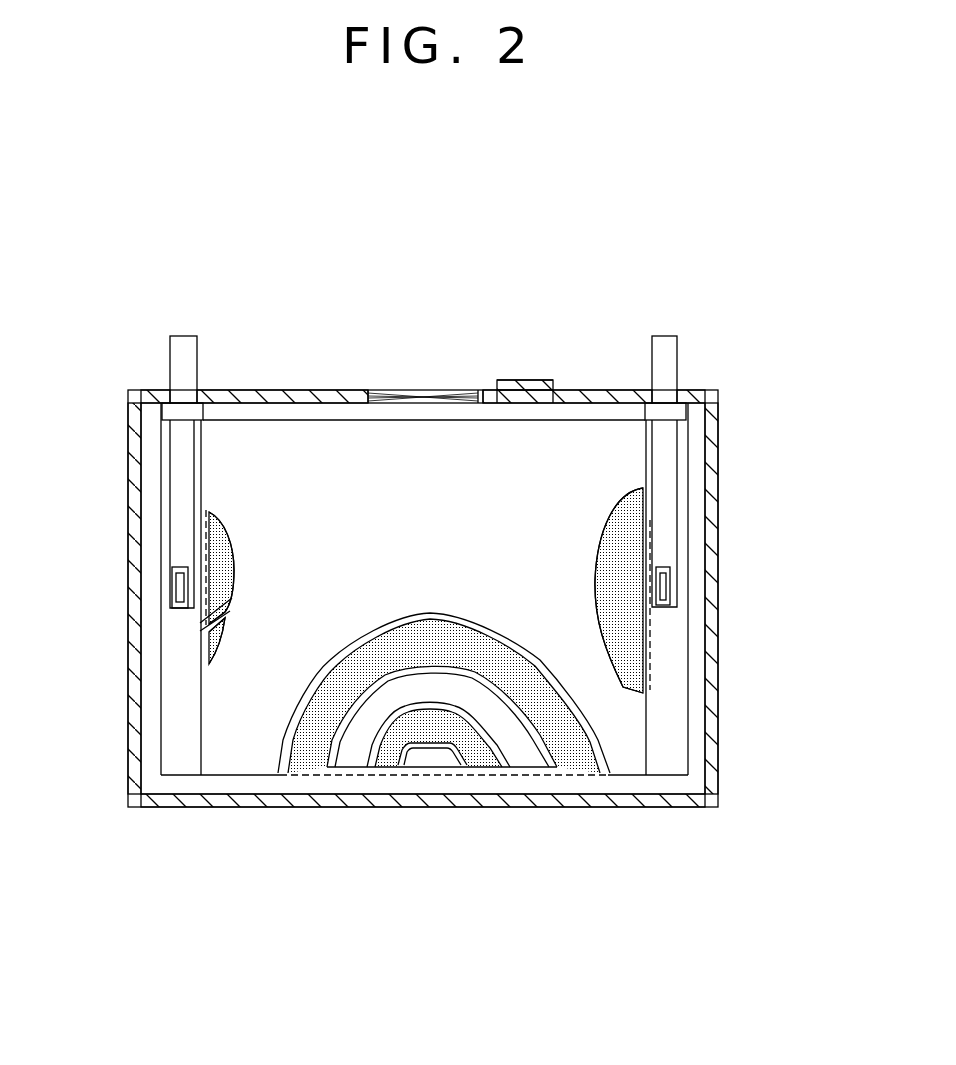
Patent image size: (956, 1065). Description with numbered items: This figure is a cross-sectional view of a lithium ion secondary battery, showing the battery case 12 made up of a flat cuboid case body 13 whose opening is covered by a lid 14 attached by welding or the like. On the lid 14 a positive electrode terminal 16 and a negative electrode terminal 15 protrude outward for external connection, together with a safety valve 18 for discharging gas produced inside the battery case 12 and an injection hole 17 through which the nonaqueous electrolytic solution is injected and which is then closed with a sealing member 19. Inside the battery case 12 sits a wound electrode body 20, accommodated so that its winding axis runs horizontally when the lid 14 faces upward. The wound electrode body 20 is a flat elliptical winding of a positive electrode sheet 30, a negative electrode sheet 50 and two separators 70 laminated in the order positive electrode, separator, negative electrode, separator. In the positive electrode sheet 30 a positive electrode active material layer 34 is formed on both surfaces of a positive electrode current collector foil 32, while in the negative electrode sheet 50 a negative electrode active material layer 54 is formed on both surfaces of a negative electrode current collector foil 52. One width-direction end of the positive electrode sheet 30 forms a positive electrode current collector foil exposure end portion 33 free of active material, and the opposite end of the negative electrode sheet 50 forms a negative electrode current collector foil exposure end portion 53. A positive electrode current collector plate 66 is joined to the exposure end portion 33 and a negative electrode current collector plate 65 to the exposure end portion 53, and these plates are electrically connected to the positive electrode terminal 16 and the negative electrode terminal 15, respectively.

The battery case 12 is at (721, 504).
The case body 13 is at (717, 782).
The lid 14 is at (612, 390).
The negative electrode terminal 15 is at (664, 342).
The positive electrode terminal 16 is at (184, 342).
The injection hole 17 is at (534, 358).
The safety valve 18 is at (421, 391).
The sealing member 19 is at (513, 378).
The wound electrode body 20 is at (300, 452).
The positive electrode sheet 30 is at (385, 753).
The positive electrode current collector foil 32 is at (176, 745).
The positive electrode current collector foil exposure end portion 33 is at (124, 662).
The positive electrode active material layer 34 is at (222, 558).
The negative electrode sheet 50 is at (203, 660).
The negative electrode current collector foil 52 is at (673, 640).
The negative electrode current collector foil exposure end portion 53 is at (736, 605).
The negative electrode active material layer 54 is at (607, 527).
The negative electrode current collector plate 65 is at (663, 467).
The positive electrode current collector plate 66 is at (187, 483).
The separator 70 is at (200, 626).